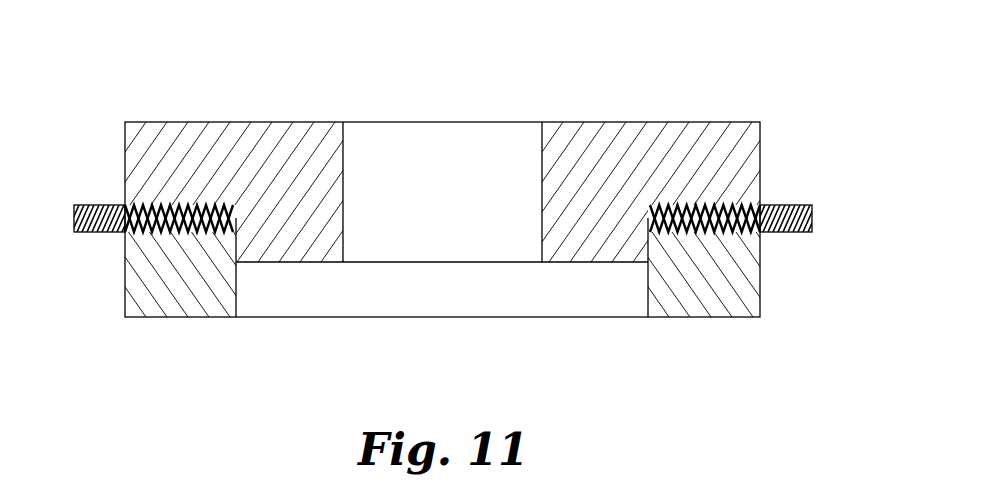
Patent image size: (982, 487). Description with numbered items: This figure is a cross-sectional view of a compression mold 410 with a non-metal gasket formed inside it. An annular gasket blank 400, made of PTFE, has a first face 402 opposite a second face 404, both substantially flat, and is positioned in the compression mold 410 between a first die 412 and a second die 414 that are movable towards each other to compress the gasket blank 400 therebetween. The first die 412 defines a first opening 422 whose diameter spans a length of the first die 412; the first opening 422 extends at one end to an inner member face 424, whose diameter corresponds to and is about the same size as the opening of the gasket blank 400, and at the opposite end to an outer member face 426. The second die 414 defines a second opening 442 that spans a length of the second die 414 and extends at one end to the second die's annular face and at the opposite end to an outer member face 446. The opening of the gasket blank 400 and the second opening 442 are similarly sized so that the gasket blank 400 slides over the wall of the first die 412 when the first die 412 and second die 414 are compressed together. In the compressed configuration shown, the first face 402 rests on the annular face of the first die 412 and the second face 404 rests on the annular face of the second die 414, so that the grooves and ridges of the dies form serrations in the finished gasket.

The annular gasket blank 400 is at (778, 205).
The first face 402 is at (100, 205).
The second face 404 is at (104, 235).
The compression mold 410 is at (812, 104).
The first die 412 is at (643, 122).
The second die 414 is at (706, 298).
The first opening 422 is at (491, 140).
The inner member face 424 is at (613, 263).
The outer member face 426 is at (186, 122).
The second opening 442 is at (465, 298).
The outer member face 446 is at (180, 308).